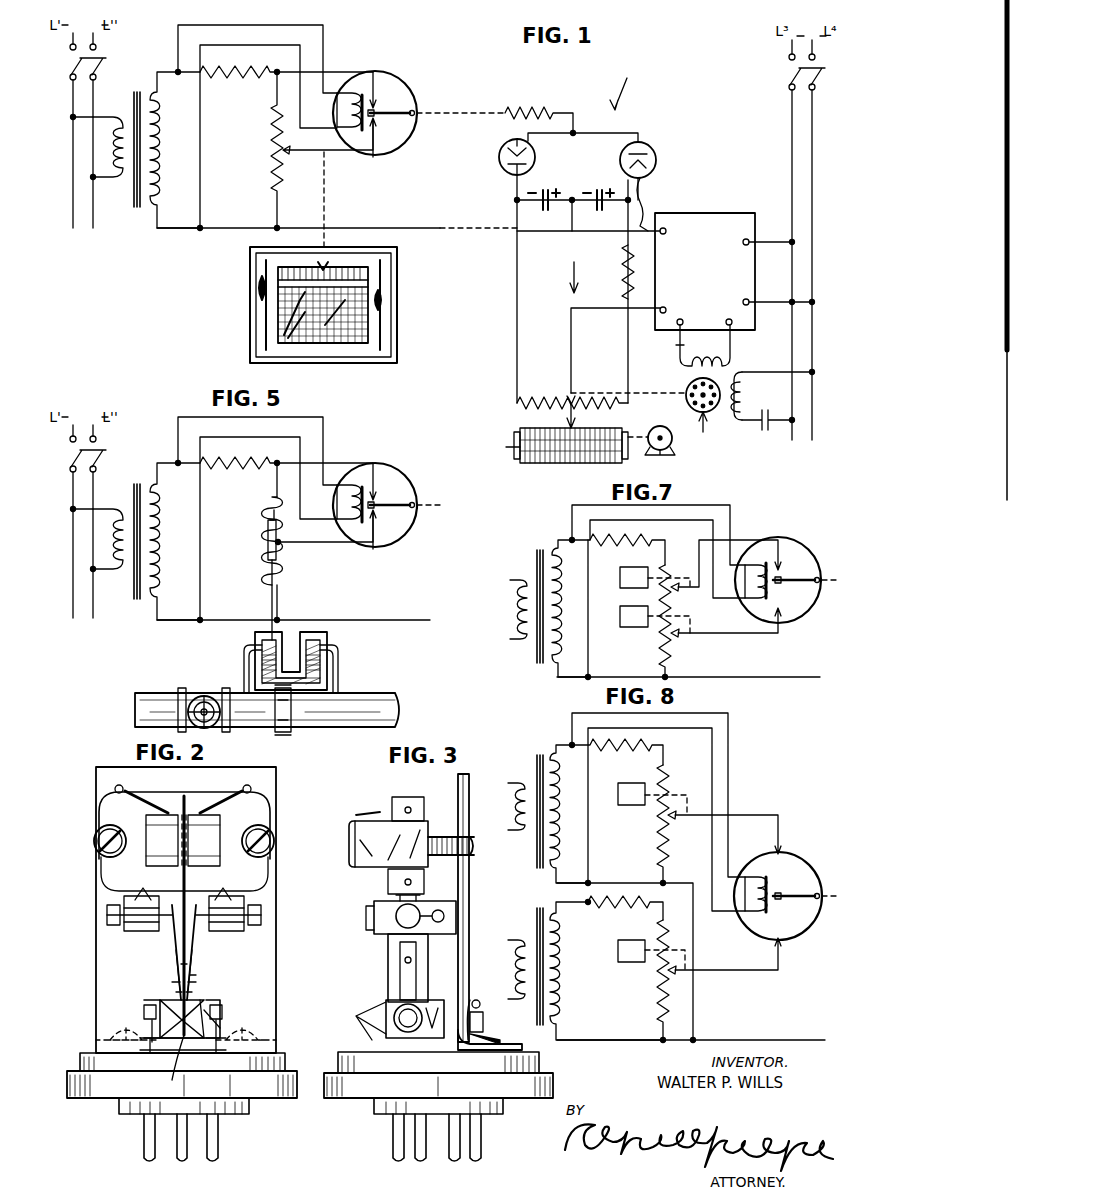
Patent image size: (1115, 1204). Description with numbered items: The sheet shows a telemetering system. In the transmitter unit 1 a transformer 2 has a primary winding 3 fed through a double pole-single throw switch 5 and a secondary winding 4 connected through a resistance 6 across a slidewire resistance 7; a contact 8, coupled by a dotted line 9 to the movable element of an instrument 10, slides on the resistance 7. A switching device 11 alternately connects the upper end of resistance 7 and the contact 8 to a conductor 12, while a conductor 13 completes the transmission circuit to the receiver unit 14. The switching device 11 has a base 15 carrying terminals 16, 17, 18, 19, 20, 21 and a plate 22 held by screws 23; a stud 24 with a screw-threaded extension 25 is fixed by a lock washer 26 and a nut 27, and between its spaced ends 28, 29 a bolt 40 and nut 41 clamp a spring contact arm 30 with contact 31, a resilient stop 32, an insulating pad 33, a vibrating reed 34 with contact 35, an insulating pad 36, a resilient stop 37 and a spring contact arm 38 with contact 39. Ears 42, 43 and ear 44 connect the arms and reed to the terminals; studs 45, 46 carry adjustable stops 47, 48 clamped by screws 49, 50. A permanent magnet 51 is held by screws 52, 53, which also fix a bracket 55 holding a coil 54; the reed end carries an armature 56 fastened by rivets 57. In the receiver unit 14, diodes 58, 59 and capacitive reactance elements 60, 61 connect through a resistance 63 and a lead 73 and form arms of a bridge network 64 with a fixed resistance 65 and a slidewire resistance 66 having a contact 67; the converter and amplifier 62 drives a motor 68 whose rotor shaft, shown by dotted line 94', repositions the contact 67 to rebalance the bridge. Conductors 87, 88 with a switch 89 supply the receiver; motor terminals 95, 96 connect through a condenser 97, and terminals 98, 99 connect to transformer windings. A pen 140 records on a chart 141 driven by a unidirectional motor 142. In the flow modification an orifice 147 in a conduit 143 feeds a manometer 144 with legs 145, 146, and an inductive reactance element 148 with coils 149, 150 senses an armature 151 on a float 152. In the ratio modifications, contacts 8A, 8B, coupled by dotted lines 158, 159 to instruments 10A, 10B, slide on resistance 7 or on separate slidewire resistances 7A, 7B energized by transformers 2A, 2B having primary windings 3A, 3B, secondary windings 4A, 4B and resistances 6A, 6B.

In FIG. 1, the transmitter unit 1 is at (162, 42).
In FIG. 5, the transmitter unit 1 is at (160, 430).
In FIG. 1, the transformer 2 is at (138, 92).
In FIG. 5, the transformer 2 is at (138, 484).
In FIG. 7, the transformer 2 is at (541, 552).
In FIG. 1, the primary winding 3 is at (118, 150).
In FIG. 5, the primary winding 3 is at (118, 542).
In FIG. 7, the primary winding 3 is at (518, 613).
In FIG. 1, the secondary winding 4 is at (156, 140).
In FIG. 5, the secondary winding 4 is at (156, 532).
In FIG. 7, the secondary winding 4 is at (560, 602).
In FIG. 1, the double pole-single throw switch 5 is at (76, 66).
In FIG. 5, the double pole-single throw switch 5 is at (76, 458).
In FIG. 1, the resistance 6 is at (236, 80).
In FIG. 5, the resistance 6 is at (236, 472).
In FIG. 7, the resistance 6 is at (652, 532).
In FIG. 1, the slidewire resistance 7 is at (268, 147).
In FIG. 7, the slidewire resistance 7 is at (660, 643).
In FIG. 1, the contact 8 is at (286, 152).
In FIG. 1, the dotted line 9 is at (325, 190).
In FIG. 1, the instrument 10 is at (392, 283).
In FIG. 1, the switching device 11 is at (362, 99).
In FIG. 5, the switching device 11 is at (362, 491).
In FIG. 7, the switching device 11 is at (782, 540).
In FIG. 8, the switching device 11 is at (785, 855).
In FIG. 1, the conductor 12 is at (420, 113).
In FIG. 5, the conductor 12 is at (420, 505).
In FIG. 7, the conductor 12 is at (820, 598).
In FIG. 8, the conductor 12 is at (818, 910).
In FIG. 1, the conductor 13 is at (408, 228).
In FIG. 5, the conductor 13 is at (408, 620).
In FIG. 7, the conductor 13 is at (818, 677).
In FIG. 8, the conductor 13 is at (808, 1040).
In FIG. 1, the receiver unit 14 is at (624, 82).
In FIG. 2, the base 15 is at (297, 1076).
In FIG. 2, the terminal 16 is at (182, 1160).
In FIG. 3, the terminal 16 is at (393, 1136).
In FIG. 2, the terminal 17 is at (144, 1136).
In FIG. 2, the terminal 18 is at (218, 1135).
In FIG. 3, the terminal 19 is at (418, 1162).
In FIG. 3, the terminal 20 is at (454, 1162).
In FIG. 3, the terminal 21 is at (481, 1138).
In FIG. 2, the plate 22 is at (96, 784).
In FIG. 3, the plate 22 is at (470, 878).
In FIG. 2, the screws 23 is at (110, 1038).
In FIG. 3, the screws 23 is at (502, 1039).
In FIG. 3, the stud 24 is at (430, 1030).
In FIG. 3, the screw-threaded extension 25 is at (485, 1020).
In FIG. 3, the lock washer 26 is at (472, 1004).
In FIG. 3, the nut 27 is at (480, 1001).
In FIG. 2, the spaced apart end 28 is at (220, 1002).
In FIG. 2, the spaced apart end 29 is at (148, 1038).
In FIG. 2, the spring contact arm 30 is at (175, 980).
In FIG. 1, the contact 31 is at (376, 126).
In FIG. 5, the contact 31 is at (376, 518).
In FIG. 2, the contact 31 is at (180, 966).
In FIG. 2, the resilient stop 32 is at (172, 954).
In FIG. 2, the insulating pad 33 is at (178, 994).
In FIG. 1, the vibrating reed 34 is at (380, 117).
In FIG. 5, the vibrating reed 34 is at (380, 509).
In FIG. 2, the vibrating reed 34 is at (176, 955).
In FIG. 1, the contact 35 is at (380, 112).
In FIG. 5, the contact 35 is at (380, 504).
In FIG. 2, the contact 35 is at (196, 957).
In FIG. 2, the insulating pad 36 is at (192, 996).
In FIG. 2, the resilient stop 37 is at (192, 955).
In FIG. 2, the spring contact arm 38 is at (190, 980).
In FIG. 1, the contact 39 is at (376, 100).
In FIG. 5, the contact 39 is at (376, 492).
In FIG. 2, the contact 39 is at (198, 972).
In FIG. 2, the bolt 40 is at (222, 1010).
In FIG. 2, the nut 41 is at (144, 1006).
In FIG. 2, the ear 42 is at (156, 1010).
In FIG. 2, the ear 43 is at (216, 1018).
In FIG. 2, the ear 44 is at (172, 1076).
In FIG. 2, the stud 45 is at (238, 930).
In FIG. 2, the stud 46 is at (134, 930).
In FIG. 2, the adjustable stop 47 is at (264, 914).
In FIG. 2, the adjustable stop 48 is at (104, 912).
In FIG. 2, the screw 49 is at (232, 888).
In FIG. 2, the screw 50 is at (138, 884).
In FIG. 2, the permanent magnet 51 is at (270, 800).
In FIG. 2, the screw 52 is at (276, 845).
In FIG. 2, the screw 53 is at (94, 842).
In FIG. 1, the coil 54 is at (337, 110).
In FIG. 5, the coil 54 is at (337, 502).
In FIG. 2, the coil 54 is at (218, 814).
In FIG. 2, the bracket 55 is at (140, 824).
In FIG. 2, the armature 56 is at (186, 796).
In FIG. 3, the armature 56 is at (396, 810).
In FIG. 3, the rivets 57 is at (410, 806).
In FIG. 1, the diode 58 is at (538, 152).
In FIG. 1, the diode 59 is at (620, 152).
In FIG. 1, the capacitive reactance element 60 is at (546, 210).
In FIG. 1, the capacitive reactance element 61 is at (600, 210).
In FIG. 1, the converter and amplifier 62 is at (712, 196).
In FIG. 1, the resistance 63 is at (525, 110).
In FIG. 1, the Wheatstone bridge network 64 is at (613, 317).
In FIG. 1, the fixed resistance 65 is at (622, 268).
In FIG. 1, the slidewire resistance 66 is at (590, 400).
In FIG. 1, the contact 67 is at (566, 400).
In FIG. 1, the reversible electrical rotating field motor 68 is at (702, 433).
In FIG. 1, the conductor 73 is at (646, 212).
In FIG. 1, the conductor 87 is at (768, 242).
In FIG. 1, the conductor 88 is at (766, 303).
In FIG. 1, the switch 89 is at (792, 75).
In FIG. 1, the dotted line 94' is at (645, 391).
In FIG. 1, the motor terminal 95 is at (780, 424).
In FIG. 1, the motor terminal 96 is at (776, 372).
In FIG. 1, the condenser 97 is at (774, 414).
In FIG. 1, the motor terminal 98 is at (678, 348).
In FIG. 1, the motor terminal 99 is at (732, 349).
In FIG. 1, the pen 140 is at (582, 434).
In FIG. 1, the recorder chart 141 is at (498, 446).
In FIG. 1, the unidirectional motor 142 is at (665, 428).
In FIG. 5, the conduit 143 is at (372, 693).
In FIG. 5, the manometer 144 is at (360, 657).
In FIG. 5, the leg 145 is at (330, 640).
In FIG. 5, the leg 146 is at (258, 640).
In FIG. 5, the orifice 147 is at (282, 730).
In FIG. 5, the inductive reactance element 148 is at (252, 540).
In FIG. 5, the coil 149 is at (276, 570).
In FIG. 5, the coil 150 is at (278, 525).
In FIG. 5, the armature 151 is at (280, 556).
In FIG. 5, the float 152 is at (245, 652).
In FIG. 7, the dotted line 158 is at (656, 588).
In FIG. 8, the dotted line 158 is at (680, 942).
In FIG. 7, the dotted line 159 is at (690, 614).
In FIG. 8, the dotted line 159 is at (683, 790).
In FIG. 8, the transformer 2A is at (537, 913).
In FIG. 8, the transformer 2B is at (539, 757).
In FIG. 8, the primary winding 3A is at (518, 972).
In FIG. 8, the primary winding 3B is at (518, 814).
In FIG. 8, the secondary winding 4A is at (558, 962).
In FIG. 8, the secondary winding 4B is at (558, 802).
In FIG. 8, the resistance 6A is at (620, 916).
In FIG. 8, the resistance 6B is at (626, 758).
In FIG. 8, the slidewire resistance 7A is at (657, 985).
In FIG. 8, the slidewire resistance 7B is at (658, 835).
In FIG. 7, the contact 8A is at (679, 580).
In FIG. 8, the contact 8A is at (676, 974).
In FIG. 7, the contact 8B is at (680, 633).
In FIG. 8, the contact 8B is at (679, 818).
In FIG. 7, the instrument 10A is at (620, 575).
In FIG. 8, the instrument 10A is at (618, 950).
In FIG. 7, the instrument 10B is at (620, 614).
In FIG. 8, the instrument 10B is at (628, 805).